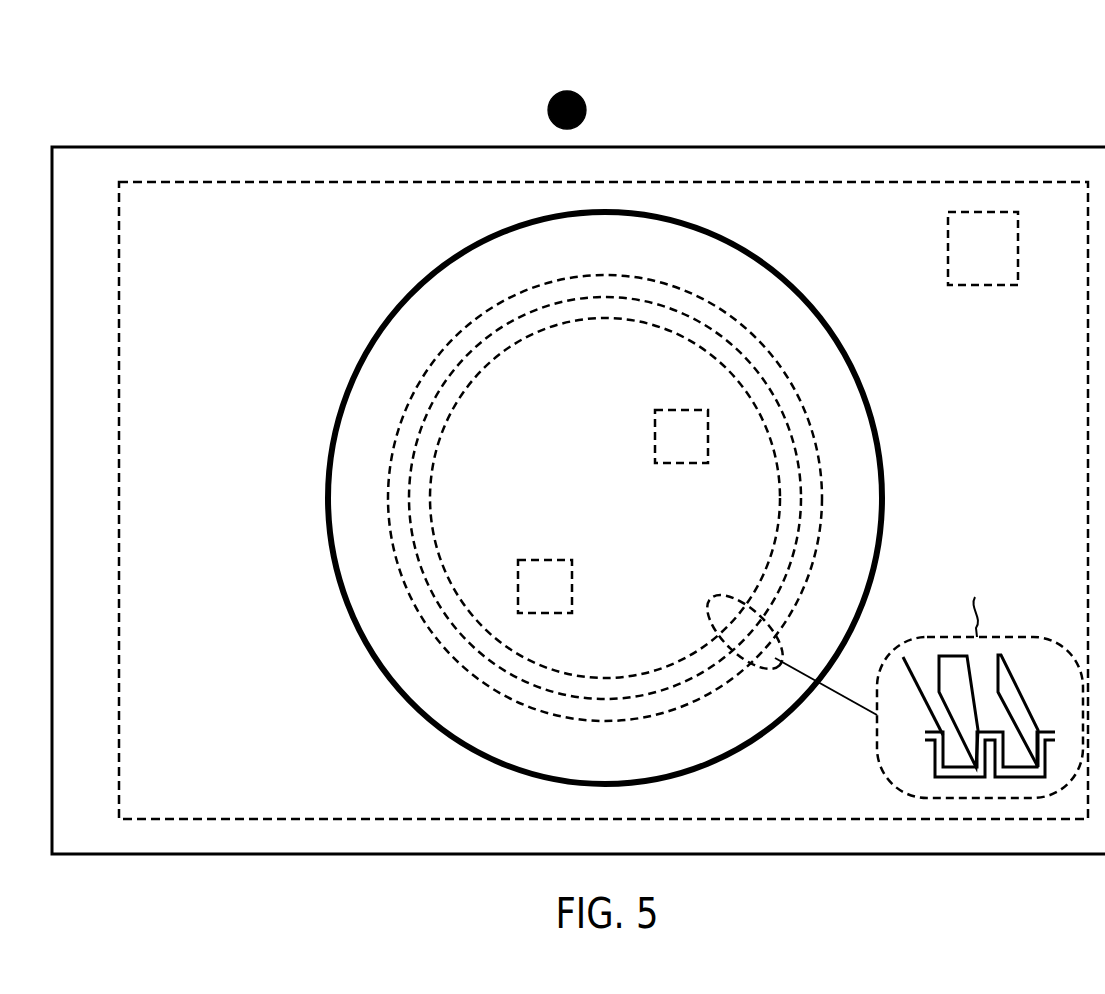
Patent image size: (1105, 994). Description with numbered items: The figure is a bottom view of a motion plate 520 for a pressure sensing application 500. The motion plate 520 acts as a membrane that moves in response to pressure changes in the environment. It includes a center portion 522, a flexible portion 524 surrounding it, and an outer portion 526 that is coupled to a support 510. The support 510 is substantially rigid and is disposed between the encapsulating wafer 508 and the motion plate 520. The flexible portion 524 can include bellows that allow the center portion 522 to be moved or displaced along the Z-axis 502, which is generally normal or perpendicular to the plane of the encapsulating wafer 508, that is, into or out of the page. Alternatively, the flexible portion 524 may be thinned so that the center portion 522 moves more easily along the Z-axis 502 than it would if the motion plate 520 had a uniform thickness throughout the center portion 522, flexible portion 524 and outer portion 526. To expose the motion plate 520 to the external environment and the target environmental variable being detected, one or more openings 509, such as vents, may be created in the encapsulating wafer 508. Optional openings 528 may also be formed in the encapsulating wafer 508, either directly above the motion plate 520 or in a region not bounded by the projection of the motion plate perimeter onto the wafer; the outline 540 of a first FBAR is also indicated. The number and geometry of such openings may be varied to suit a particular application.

The pressure sensing application 500 is at (283, 124).
The Z-axis 502 is at (602, 96).
The encapsulating wafer 508 is at (984, 146).
The opening 509 is at (986, 285).
The support 510 is at (345, 392).
The motion plate 520 is at (346, 462).
The center portion 522 is at (585, 564).
The flexible portion 524 is at (797, 488).
The outer portion 526 is at (793, 314).
The optional opening 528 is at (292, 588).
The outline of first FBAR 540 is at (210, 796).